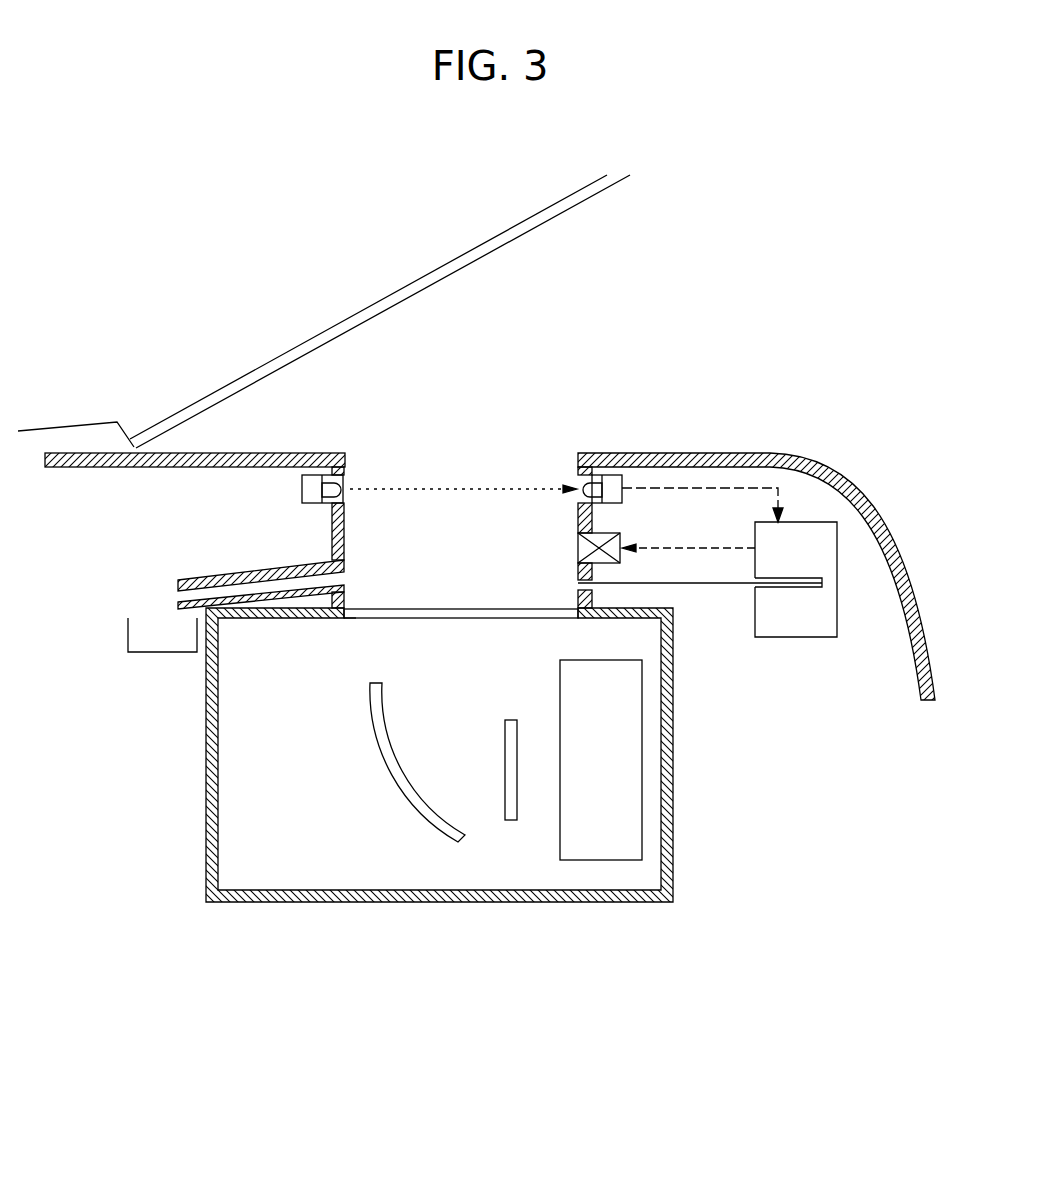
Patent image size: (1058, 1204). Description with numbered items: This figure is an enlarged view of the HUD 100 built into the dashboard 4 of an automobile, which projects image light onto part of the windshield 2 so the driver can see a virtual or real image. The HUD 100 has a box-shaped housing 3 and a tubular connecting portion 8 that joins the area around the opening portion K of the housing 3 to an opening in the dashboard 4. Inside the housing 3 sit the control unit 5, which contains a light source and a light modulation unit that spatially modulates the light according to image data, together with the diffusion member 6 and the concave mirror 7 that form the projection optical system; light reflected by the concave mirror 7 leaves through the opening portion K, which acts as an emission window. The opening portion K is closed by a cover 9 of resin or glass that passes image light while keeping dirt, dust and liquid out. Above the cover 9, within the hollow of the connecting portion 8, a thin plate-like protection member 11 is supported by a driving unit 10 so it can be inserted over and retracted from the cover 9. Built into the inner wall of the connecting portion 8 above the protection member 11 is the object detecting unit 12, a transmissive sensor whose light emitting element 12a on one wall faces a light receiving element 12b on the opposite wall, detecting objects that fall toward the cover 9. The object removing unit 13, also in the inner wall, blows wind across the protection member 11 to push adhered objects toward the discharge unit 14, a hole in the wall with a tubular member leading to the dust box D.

The windshield 2 is at (495, 230).
The housing 3 is at (268, 902).
The dashboard 4 is at (697, 453).
The control unit 5 is at (595, 860).
The diffusion member 6 is at (511, 820).
The concave mirror 7 is at (460, 842).
The connecting portion 8 is at (578, 475).
The cover 9 is at (453, 608).
The driving unit 10 is at (817, 637).
The protection member 11 is at (713, 585).
The object detecting unit 12 is at (462, 426).
The light emitting element 12a is at (344, 487).
The light receiving element 12b is at (577, 487).
The object removing unit 13 is at (625, 532).
The discharge unit 14 is at (293, 563).
The HUD 100 is at (497, 817).
The dust box D is at (128, 632).
The opening portion K is at (353, 618).